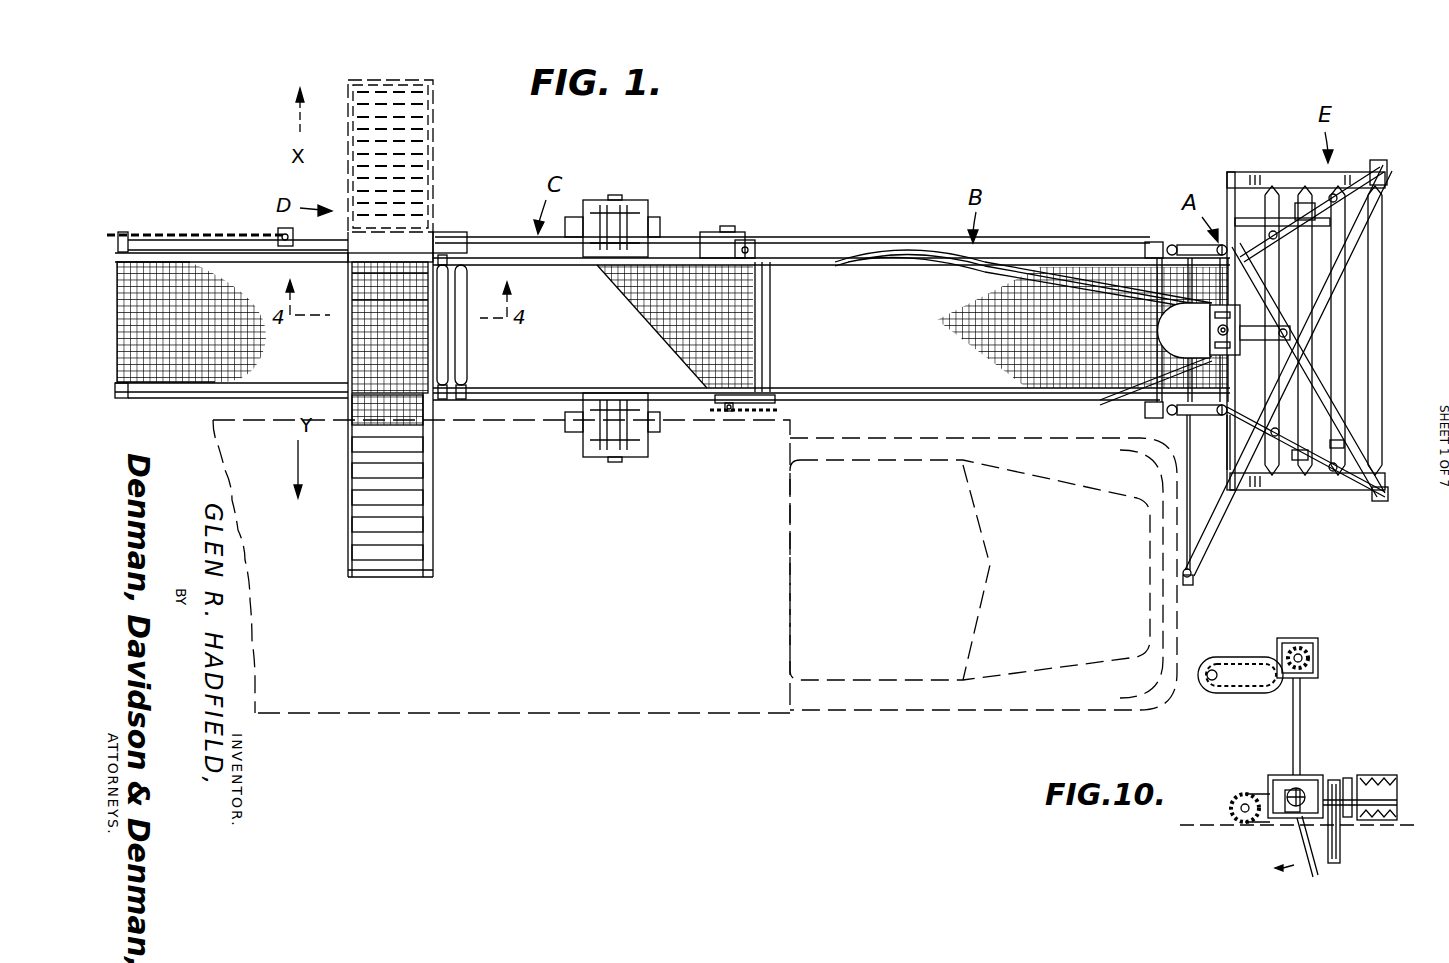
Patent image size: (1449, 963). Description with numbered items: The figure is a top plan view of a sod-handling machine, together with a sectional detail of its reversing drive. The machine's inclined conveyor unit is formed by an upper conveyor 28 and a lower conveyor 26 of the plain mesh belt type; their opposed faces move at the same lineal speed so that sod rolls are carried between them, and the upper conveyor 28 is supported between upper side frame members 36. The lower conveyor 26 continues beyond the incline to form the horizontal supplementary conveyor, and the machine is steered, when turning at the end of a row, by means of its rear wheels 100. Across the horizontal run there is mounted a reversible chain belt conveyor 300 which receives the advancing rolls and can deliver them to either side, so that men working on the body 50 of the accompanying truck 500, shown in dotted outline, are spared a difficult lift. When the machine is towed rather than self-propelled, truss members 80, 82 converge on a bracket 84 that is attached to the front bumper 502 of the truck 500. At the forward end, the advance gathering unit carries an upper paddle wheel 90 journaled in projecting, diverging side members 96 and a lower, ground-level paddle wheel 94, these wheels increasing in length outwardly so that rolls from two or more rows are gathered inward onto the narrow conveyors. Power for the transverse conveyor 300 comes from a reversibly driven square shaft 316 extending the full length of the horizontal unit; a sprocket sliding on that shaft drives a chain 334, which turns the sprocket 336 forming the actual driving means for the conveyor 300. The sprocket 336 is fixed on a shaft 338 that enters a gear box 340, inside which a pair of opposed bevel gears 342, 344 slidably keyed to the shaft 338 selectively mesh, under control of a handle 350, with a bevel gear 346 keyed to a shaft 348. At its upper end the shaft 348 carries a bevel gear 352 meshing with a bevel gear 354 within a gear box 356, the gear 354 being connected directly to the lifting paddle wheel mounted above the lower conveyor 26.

In FIG. 1, the lower conveyor 26 is at (581, 355).
In FIG. 1, the upper conveyor 28 is at (911, 327).
In FIG. 1, the upper side frame members 36 is at (808, 262).
In FIG. 1, the body 50 is at (615, 712).
In FIG. 1, the truss member 80 is at (1190, 457).
In FIG. 1, the truss member 82 is at (1215, 512).
In FIG. 1, the bracket 84 is at (1193, 578).
In FIG. 1, the upper paddle wheel 90 is at (1371, 331).
In FIG. 1, the lower paddle wheel 94 is at (1325, 308).
In FIG. 1, the diverging side members 96 is at (1350, 182).
In FIG. 1, the rear wheels 100 is at (660, 226).
In FIG. 1, the square shaft 316 is at (492, 236).
In FIG. 1, the truck 500 is at (968, 640).
In FIG. 1, the front bumper 502 is at (1190, 584).
In FIG. 10, the chain belt conveyor 300 is at (1386, 775).
In FIG. 10, the chain 334 is at (1331, 865).
In FIG. 10, the sprocket 336 is at (1347, 776).
In FIG. 10, the shaft 338 is at (1366, 820).
In FIG. 10, the gear box 340 is at (1278, 778).
In FIG. 10, the bevel gear 342 is at (1295, 820).
In FIG. 10, the bevel gear 344 is at (1270, 818).
In FIG. 10, the bevel gear 346 is at (1300, 786).
In FIG. 10, the shaft 348 is at (1301, 706).
In FIG. 10, the handle 350 is at (1312, 870).
In FIG. 10, the bevel gear 352 is at (1318, 668).
In FIG. 10, the bevel gear 354 is at (1300, 648).
In FIG. 10, the gear box 356 is at (1280, 642).